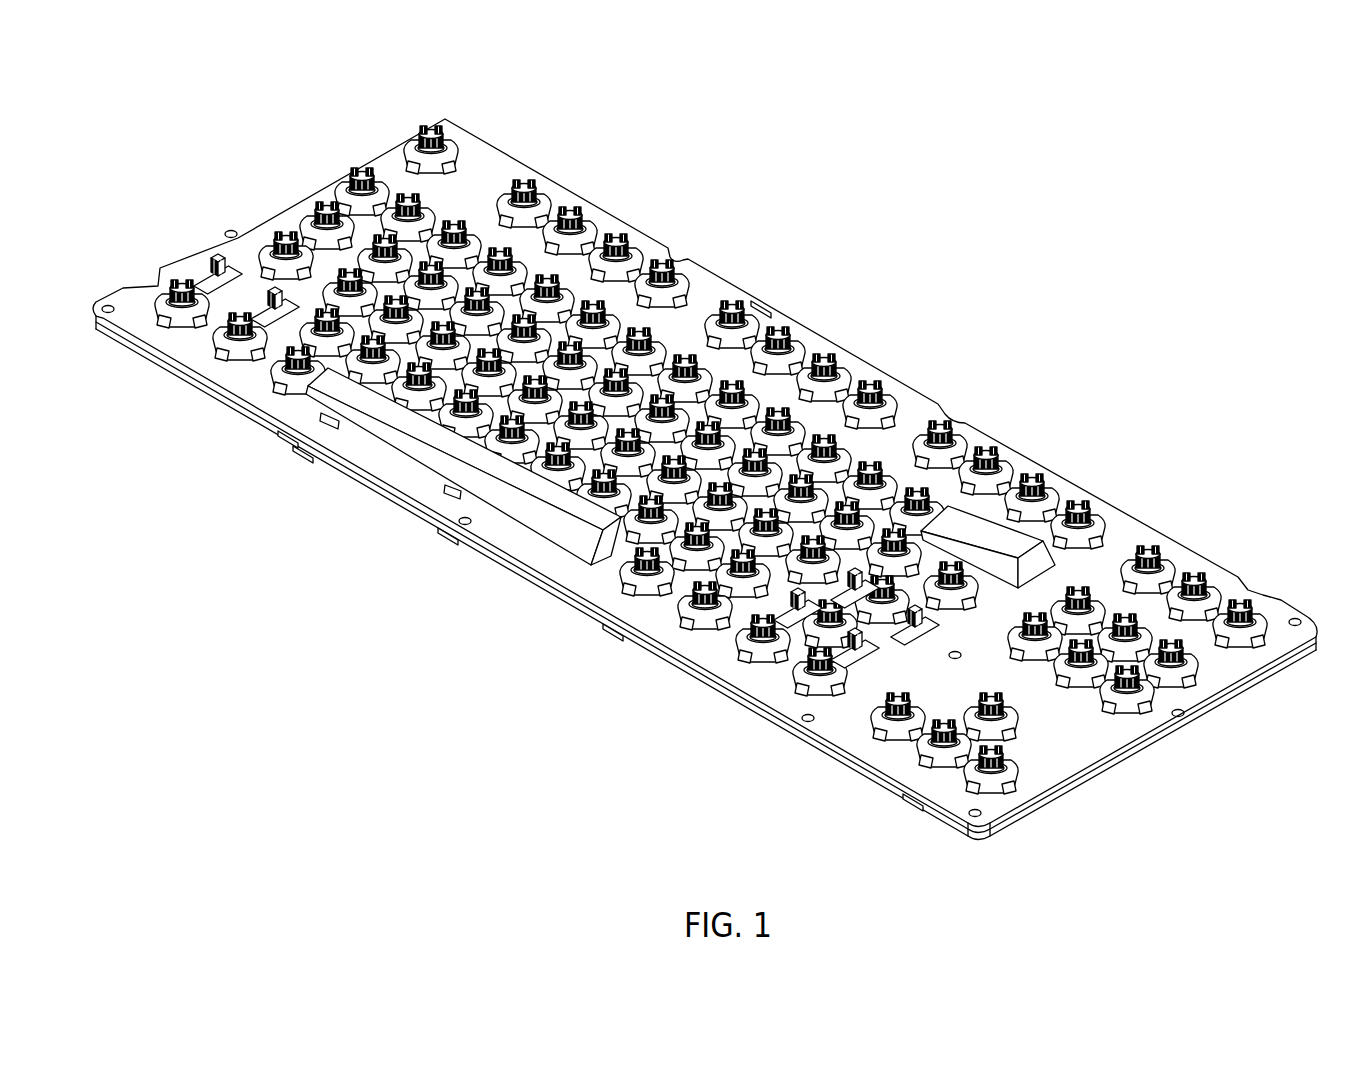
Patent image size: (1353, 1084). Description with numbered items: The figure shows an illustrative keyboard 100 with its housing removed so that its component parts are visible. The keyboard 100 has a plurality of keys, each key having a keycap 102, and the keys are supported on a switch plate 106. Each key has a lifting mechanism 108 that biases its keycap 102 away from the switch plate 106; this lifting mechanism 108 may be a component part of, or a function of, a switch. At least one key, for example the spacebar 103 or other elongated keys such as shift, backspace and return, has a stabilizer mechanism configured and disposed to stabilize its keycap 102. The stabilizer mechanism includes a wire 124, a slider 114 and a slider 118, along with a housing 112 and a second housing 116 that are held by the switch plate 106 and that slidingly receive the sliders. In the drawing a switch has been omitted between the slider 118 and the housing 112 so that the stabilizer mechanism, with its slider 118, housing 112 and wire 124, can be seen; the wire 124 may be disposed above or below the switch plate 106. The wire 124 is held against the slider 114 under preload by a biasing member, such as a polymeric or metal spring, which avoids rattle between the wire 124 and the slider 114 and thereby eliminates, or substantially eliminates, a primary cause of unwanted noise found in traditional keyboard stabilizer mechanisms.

The keyboard 100 is at (705, 456).
The keycap 102 is at (972, 547).
The spacebar 103 is at (510, 497).
The switch plate 106 is at (916, 398).
The lifting mechanism 108 is at (752, 297).
The housing 112 is at (157, 338).
The slider 114 is at (813, 697).
The second housing 116 is at (312, 408).
The slider 118 is at (197, 263).
The wire 124 is at (248, 275).